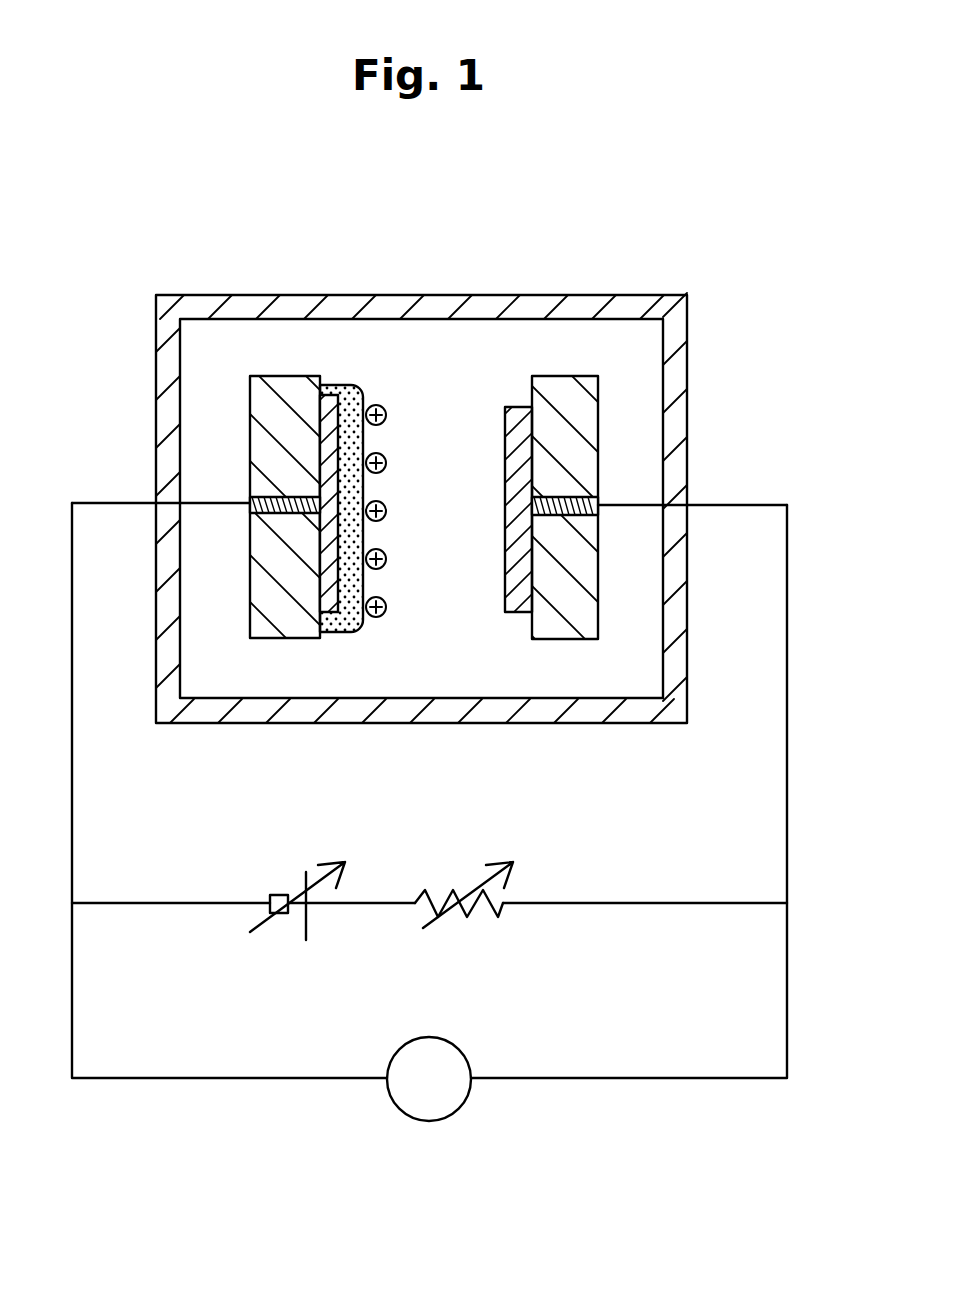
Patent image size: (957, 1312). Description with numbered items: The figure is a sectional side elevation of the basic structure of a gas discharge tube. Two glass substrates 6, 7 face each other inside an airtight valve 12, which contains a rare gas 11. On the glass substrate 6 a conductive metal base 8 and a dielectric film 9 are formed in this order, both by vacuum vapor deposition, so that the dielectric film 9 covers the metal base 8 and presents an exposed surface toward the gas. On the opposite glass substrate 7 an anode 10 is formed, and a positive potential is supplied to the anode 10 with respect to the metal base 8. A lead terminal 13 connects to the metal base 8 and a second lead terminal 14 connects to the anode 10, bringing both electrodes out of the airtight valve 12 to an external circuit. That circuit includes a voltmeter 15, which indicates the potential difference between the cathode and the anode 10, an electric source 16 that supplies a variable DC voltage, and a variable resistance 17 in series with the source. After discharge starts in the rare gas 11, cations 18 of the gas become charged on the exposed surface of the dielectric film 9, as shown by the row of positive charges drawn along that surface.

The glass substrate 6 is at (285, 390).
The glass substrate 7 is at (568, 393).
The conductive metal base 8 is at (335, 412).
The dielectric film 9 is at (351, 391).
The anode 10 is at (510, 407).
The rare gas 11 is at (283, 338).
The airtight valve 12 is at (677, 340).
The lead terminal 13 is at (250, 492).
The lead terminal 14 is at (602, 492).
The voltmeter 15 is at (467, 1100).
The electric source 16 is at (280, 875).
The variable resistance 17 is at (535, 877).
The cations 18 is at (380, 404).